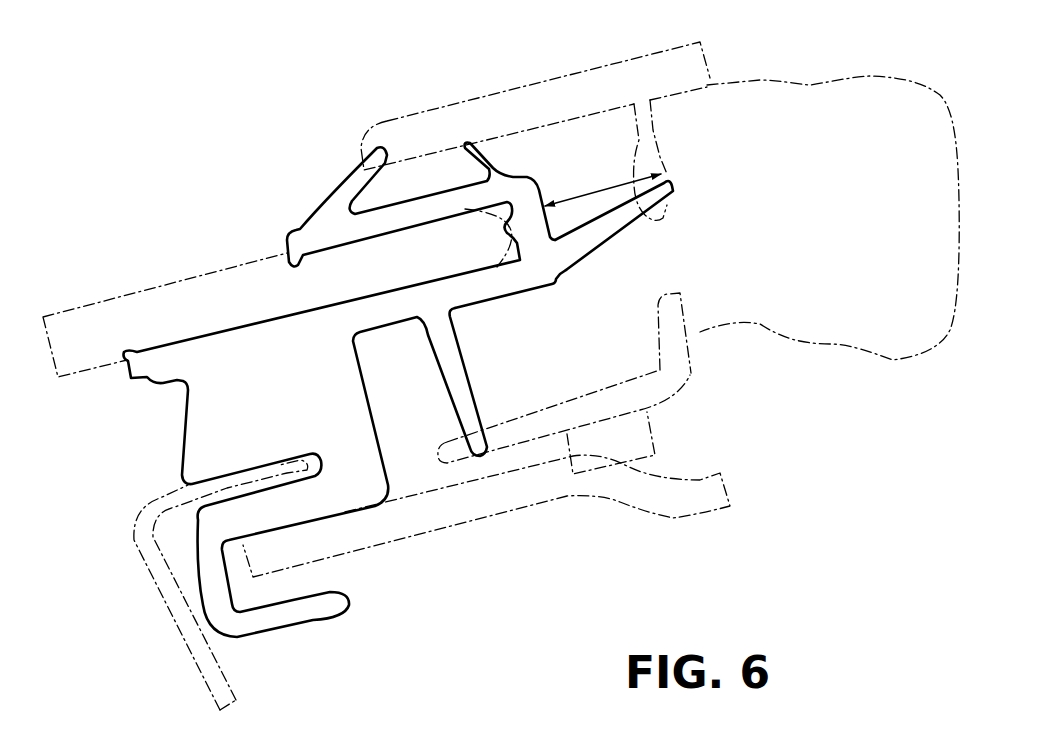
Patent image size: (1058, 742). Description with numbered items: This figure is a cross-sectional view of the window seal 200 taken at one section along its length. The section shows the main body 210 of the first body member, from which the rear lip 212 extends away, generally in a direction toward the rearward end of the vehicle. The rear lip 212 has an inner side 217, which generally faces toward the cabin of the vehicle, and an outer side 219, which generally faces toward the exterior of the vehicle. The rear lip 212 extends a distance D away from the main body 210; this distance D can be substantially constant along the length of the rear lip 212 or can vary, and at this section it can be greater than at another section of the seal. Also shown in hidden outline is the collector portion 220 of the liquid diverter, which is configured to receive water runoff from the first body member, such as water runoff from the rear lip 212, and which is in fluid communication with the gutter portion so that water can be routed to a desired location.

The window seal 200 is at (571, 311).
The main body 210 is at (518, 278).
The rear lip 212 is at (624, 231).
The inner side 217 is at (603, 258).
The outer side 219 is at (593, 172).
The collector portion 220 is at (808, 80).
The distance D is at (643, 178).